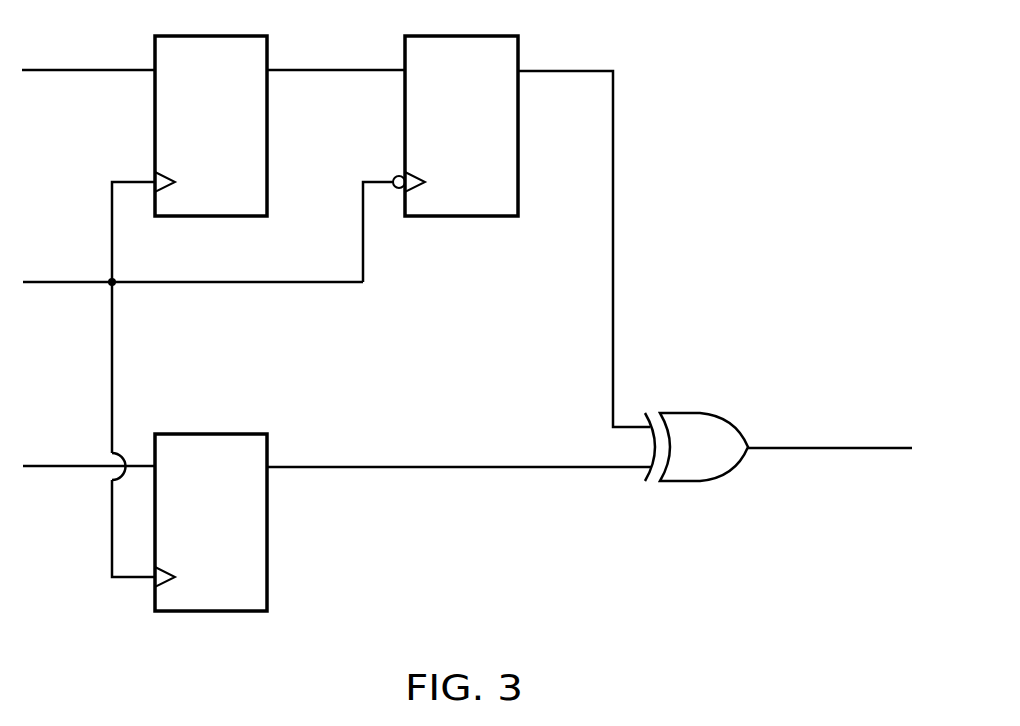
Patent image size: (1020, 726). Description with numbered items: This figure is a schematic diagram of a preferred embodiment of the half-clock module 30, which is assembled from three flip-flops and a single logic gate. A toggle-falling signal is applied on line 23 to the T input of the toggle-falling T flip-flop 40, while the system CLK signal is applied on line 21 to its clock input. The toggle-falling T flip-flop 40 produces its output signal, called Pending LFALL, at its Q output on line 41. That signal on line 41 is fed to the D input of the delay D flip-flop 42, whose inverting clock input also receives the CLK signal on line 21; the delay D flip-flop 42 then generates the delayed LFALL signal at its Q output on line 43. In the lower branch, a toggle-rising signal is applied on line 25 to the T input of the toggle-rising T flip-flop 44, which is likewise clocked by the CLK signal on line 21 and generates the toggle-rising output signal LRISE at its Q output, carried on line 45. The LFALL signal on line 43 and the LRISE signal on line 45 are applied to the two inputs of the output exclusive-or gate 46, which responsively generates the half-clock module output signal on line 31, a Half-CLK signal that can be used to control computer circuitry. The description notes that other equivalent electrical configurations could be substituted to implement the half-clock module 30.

The line carrying system CLK signal 21 is at (35, 283).
The line carrying toggle-falling signal 23 is at (60, 71).
The line carrying toggle-rising signal 25 is at (33, 467).
The half-clock module 30 is at (500, 572).
The line carrying half-clock module output signal 31 is at (775, 447).
The toggle-falling T flip-flop 40 is at (268, 183).
The line carrying toggle-falling T flip-flop output signal 41 is at (325, 72).
The delay D flip-flop 42 is at (519, 183).
The line carrying delay D flip-flop output signal 43 is at (613, 143).
The toggle-rising T flip-flop 44 is at (268, 578).
The line carrying toggle-rising T flip-flop output signal 45 is at (493, 470).
The output exclusive-or (XOR) gate 46 is at (700, 482).